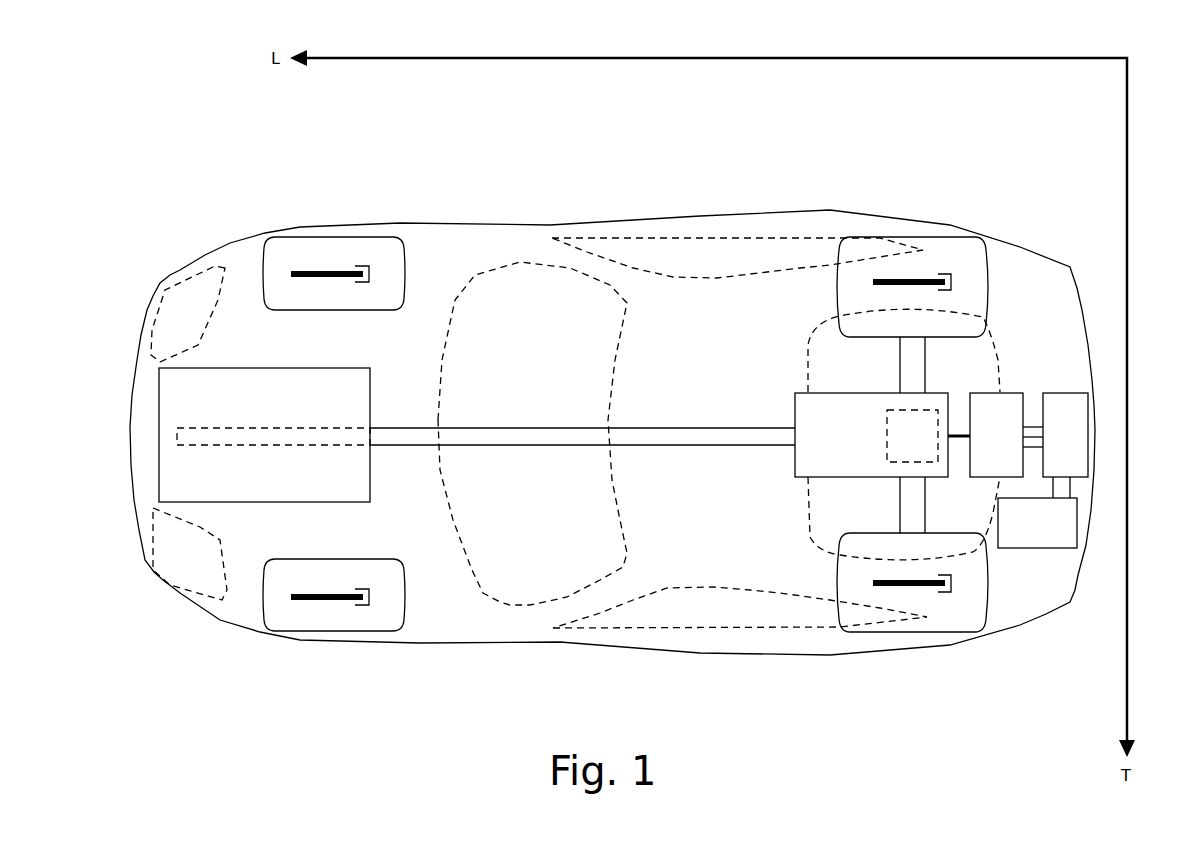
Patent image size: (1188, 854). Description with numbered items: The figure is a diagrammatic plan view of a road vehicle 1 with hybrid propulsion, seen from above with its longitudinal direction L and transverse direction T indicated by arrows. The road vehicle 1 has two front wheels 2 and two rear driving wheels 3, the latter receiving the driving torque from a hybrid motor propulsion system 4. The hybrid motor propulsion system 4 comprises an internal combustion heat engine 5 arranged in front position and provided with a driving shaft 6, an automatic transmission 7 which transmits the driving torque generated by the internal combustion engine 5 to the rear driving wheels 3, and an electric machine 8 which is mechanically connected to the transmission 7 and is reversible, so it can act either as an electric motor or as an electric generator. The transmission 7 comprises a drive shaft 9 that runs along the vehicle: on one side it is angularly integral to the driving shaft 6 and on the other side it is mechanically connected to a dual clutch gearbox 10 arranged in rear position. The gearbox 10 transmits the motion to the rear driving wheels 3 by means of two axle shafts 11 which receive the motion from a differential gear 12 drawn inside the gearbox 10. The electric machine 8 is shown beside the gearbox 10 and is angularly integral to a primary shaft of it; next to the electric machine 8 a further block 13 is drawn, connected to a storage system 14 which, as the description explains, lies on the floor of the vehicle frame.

The road vehicle 1 is at (960, 763).
The front wheels 2 is at (287, 253).
The rear driving wheels 3 is at (973, 252).
The hybrid motor propulsion system 4 is at (198, 240).
The internal combustion heat engine 5 is at (164, 390).
The driving shaft 6 is at (255, 440).
The automatic transmission 7 is at (640, 202).
The electric machine 8 is at (1006, 435).
The drive shaft 9 is at (655, 440).
The dual clutch gearbox 10 is at (882, 435).
The axle shafts 11 is at (903, 356).
The differential gear 12 is at (912, 436).
The power electronics 13 is at (1065, 445).
The storage system 14 is at (1037, 523).